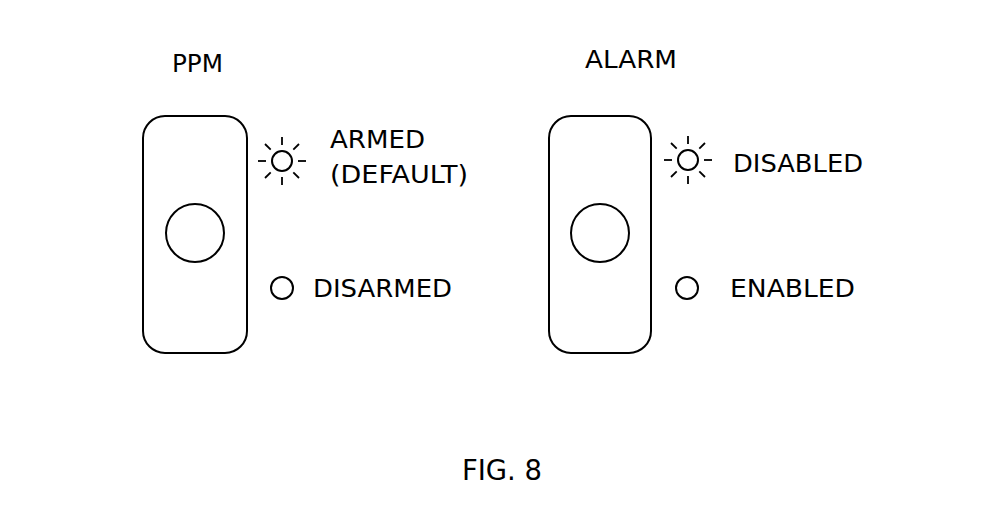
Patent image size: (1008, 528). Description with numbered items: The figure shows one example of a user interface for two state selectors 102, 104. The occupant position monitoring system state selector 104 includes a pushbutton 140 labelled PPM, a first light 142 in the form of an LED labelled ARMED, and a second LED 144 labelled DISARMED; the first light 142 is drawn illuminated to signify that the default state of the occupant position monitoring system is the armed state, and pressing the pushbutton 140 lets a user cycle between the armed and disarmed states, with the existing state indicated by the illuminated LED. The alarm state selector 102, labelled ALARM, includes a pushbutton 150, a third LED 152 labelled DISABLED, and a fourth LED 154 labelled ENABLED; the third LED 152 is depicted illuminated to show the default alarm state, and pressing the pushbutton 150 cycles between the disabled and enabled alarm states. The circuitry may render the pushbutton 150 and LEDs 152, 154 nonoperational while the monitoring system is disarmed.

The alarm state selector 102 is at (110, 170).
The pushbutton 140 is at (188, 258).
The first light 142 is at (284, 149).
The second LED 144 is at (285, 299).
The occupant position monitoring system state selector 104 is at (695, 87).
The pushbutton 150 is at (612, 233).
The third LED 152 is at (700, 155).
The fourth LED 154 is at (690, 299).